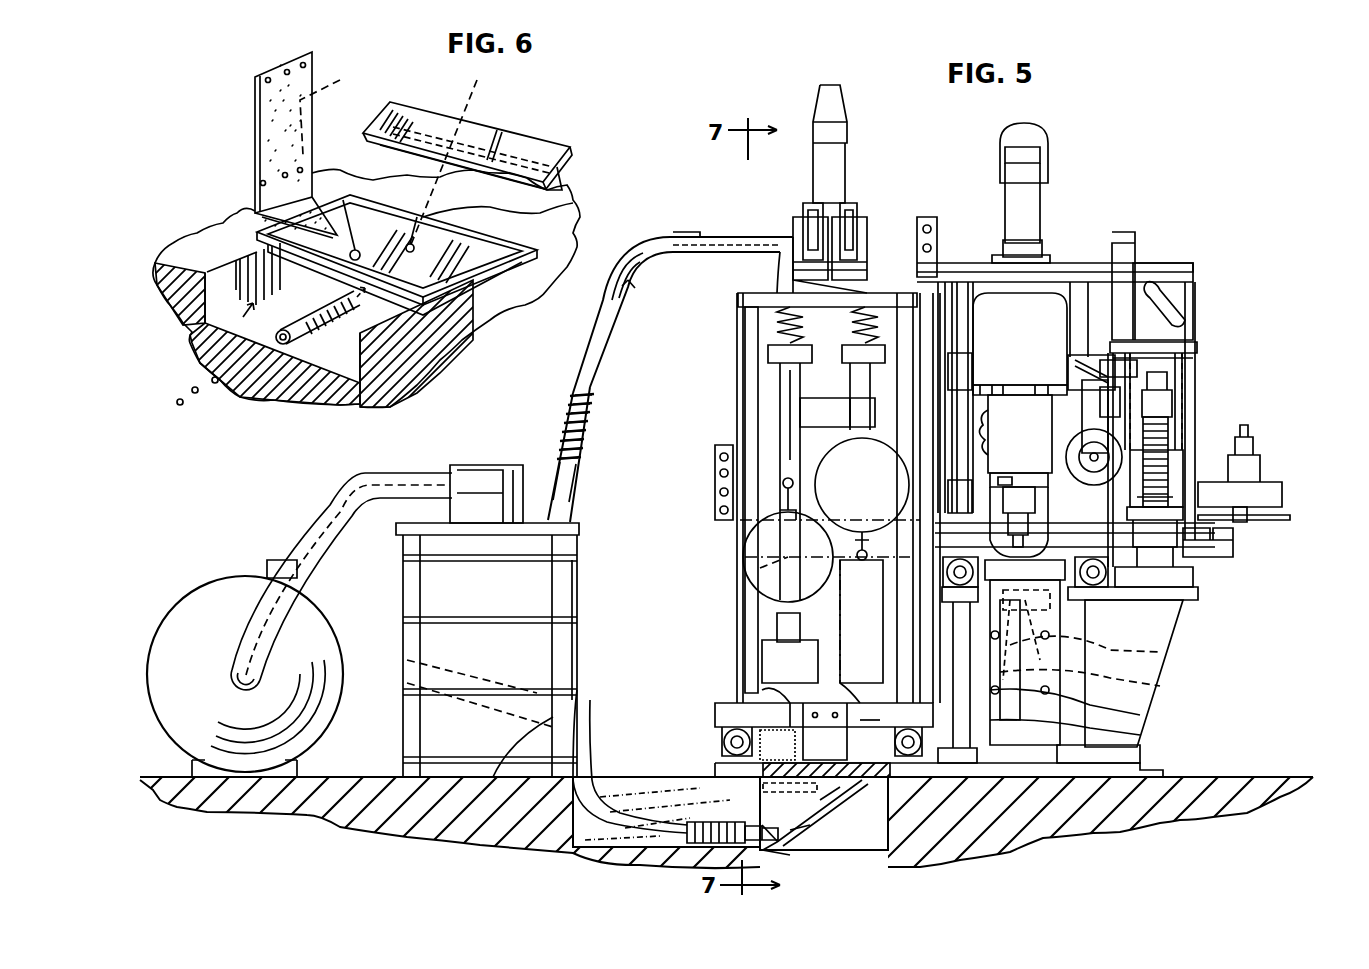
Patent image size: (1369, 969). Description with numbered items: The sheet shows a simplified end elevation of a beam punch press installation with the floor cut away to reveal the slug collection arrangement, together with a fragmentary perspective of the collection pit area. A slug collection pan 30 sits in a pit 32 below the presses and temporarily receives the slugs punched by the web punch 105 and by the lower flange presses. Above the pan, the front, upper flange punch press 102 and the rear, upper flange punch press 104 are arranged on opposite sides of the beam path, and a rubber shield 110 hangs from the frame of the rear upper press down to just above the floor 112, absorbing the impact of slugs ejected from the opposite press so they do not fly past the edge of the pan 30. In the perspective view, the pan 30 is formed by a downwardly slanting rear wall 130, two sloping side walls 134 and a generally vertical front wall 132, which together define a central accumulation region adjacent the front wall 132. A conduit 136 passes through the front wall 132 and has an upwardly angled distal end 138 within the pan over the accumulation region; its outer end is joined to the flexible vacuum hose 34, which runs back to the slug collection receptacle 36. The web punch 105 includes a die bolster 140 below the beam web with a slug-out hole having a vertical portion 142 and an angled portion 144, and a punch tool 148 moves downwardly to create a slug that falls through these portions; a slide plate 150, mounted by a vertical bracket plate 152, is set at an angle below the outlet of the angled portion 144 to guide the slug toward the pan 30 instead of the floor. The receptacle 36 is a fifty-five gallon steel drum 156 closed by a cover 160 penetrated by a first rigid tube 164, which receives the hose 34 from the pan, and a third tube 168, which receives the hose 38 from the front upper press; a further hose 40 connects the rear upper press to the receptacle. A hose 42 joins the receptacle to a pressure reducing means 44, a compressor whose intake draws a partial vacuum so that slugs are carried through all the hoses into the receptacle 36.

In FIG. 6, the slug collection pan 30 is at (482, 253).
In FIG. 5, the slug collection pan 30 is at (900, 844).
In FIG. 6, the pit 32 is at (207, 335).
In FIG. 5, the pit 32 is at (560, 832).
In FIG. 6, the vacuum hose 34 is at (303, 337).
In FIG. 5, the vacuum hose 34 is at (595, 760).
In FIG. 5, the slug collection receptacle 36 is at (596, 544).
In FIG. 5, the hose 38 is at (793, 240).
In FIG. 5, the hose 40 is at (760, 268).
In FIG. 5, the hose 42 is at (422, 478).
In FIG. 5, the pressure reducing means 44 is at (227, 564).
In FIG. 5, the second punch press 102 is at (842, 357).
In FIG. 5, the second punch press of the second pair 104 is at (768, 355).
In FIG. 5, the web punch 105 is at (1033, 440).
In FIG. 6, the rubber shield 110 is at (267, 151).
In FIG. 5, the rubber shield 110 is at (780, 700).
In FIG. 5, the floor 112 is at (575, 708).
In FIG. 6, the rear wall 130 is at (540, 217).
In FIG. 5, the rear wall 130 is at (845, 815).
In FIG. 6, the front wall 132 is at (245, 230).
In FIG. 5, the front wall 132 is at (770, 765).
In FIG. 6, the side walls 134 is at (355, 250).
In FIG. 5, the conduit 136 is at (757, 825).
In FIG. 5, the distal end 138 is at (783, 847).
In FIG. 5, the die bolster 140 is at (1040, 607).
In FIG. 5, the vertical portion 142 is at (1160, 652).
In FIG. 5, the angled portion 144 is at (1160, 686).
In FIG. 5, the punch tool 148 is at (1198, 592).
In FIG. 6, the slide plate 150 is at (543, 150).
In FIG. 5, the slide plate 150 is at (1140, 715).
In FIG. 6, the vertical bracket plate 152 is at (562, 187).
In FIG. 5, the vertical bracket plate 152 is at (1140, 735).
In FIG. 5, the drum 156 is at (575, 592).
In FIG. 5, the cover 160 is at (575, 515).
In FIG. 5, the first rigid tube 164 is at (400, 528).
In FIG. 5, the third tube 168 is at (578, 480).